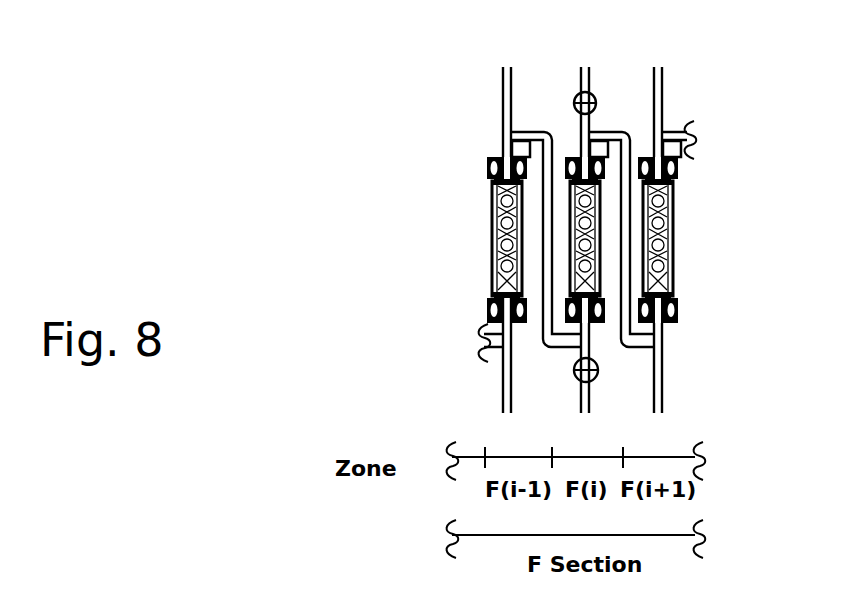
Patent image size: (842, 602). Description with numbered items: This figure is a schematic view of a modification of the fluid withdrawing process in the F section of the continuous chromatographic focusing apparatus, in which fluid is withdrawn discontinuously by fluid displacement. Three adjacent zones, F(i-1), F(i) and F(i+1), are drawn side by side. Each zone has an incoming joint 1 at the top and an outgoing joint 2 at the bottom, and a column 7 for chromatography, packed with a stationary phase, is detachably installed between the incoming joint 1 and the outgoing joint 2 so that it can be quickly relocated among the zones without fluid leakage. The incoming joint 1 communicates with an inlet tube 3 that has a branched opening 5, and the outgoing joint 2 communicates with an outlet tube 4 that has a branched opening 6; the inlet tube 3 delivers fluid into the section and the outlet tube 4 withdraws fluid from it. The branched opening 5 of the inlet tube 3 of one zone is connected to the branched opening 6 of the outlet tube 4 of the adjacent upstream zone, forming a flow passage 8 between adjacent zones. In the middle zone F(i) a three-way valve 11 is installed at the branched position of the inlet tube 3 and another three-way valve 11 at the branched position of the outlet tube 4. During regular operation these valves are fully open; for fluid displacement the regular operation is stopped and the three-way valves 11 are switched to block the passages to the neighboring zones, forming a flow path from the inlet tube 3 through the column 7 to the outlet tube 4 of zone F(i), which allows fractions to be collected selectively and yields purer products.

The incoming joint 1 is at (487, 175).
The outgoing joint 2 is at (487, 307).
The inlet tube 3 is at (503, 80).
The outlet tube 4 is at (503, 400).
The branched opening 5 is at (516, 132).
The branched opening 6 is at (478, 345).
The column 7 is at (492, 230).
The flow passage 8 is at (545, 160).
The three-way valve 11 is at (590, 92).